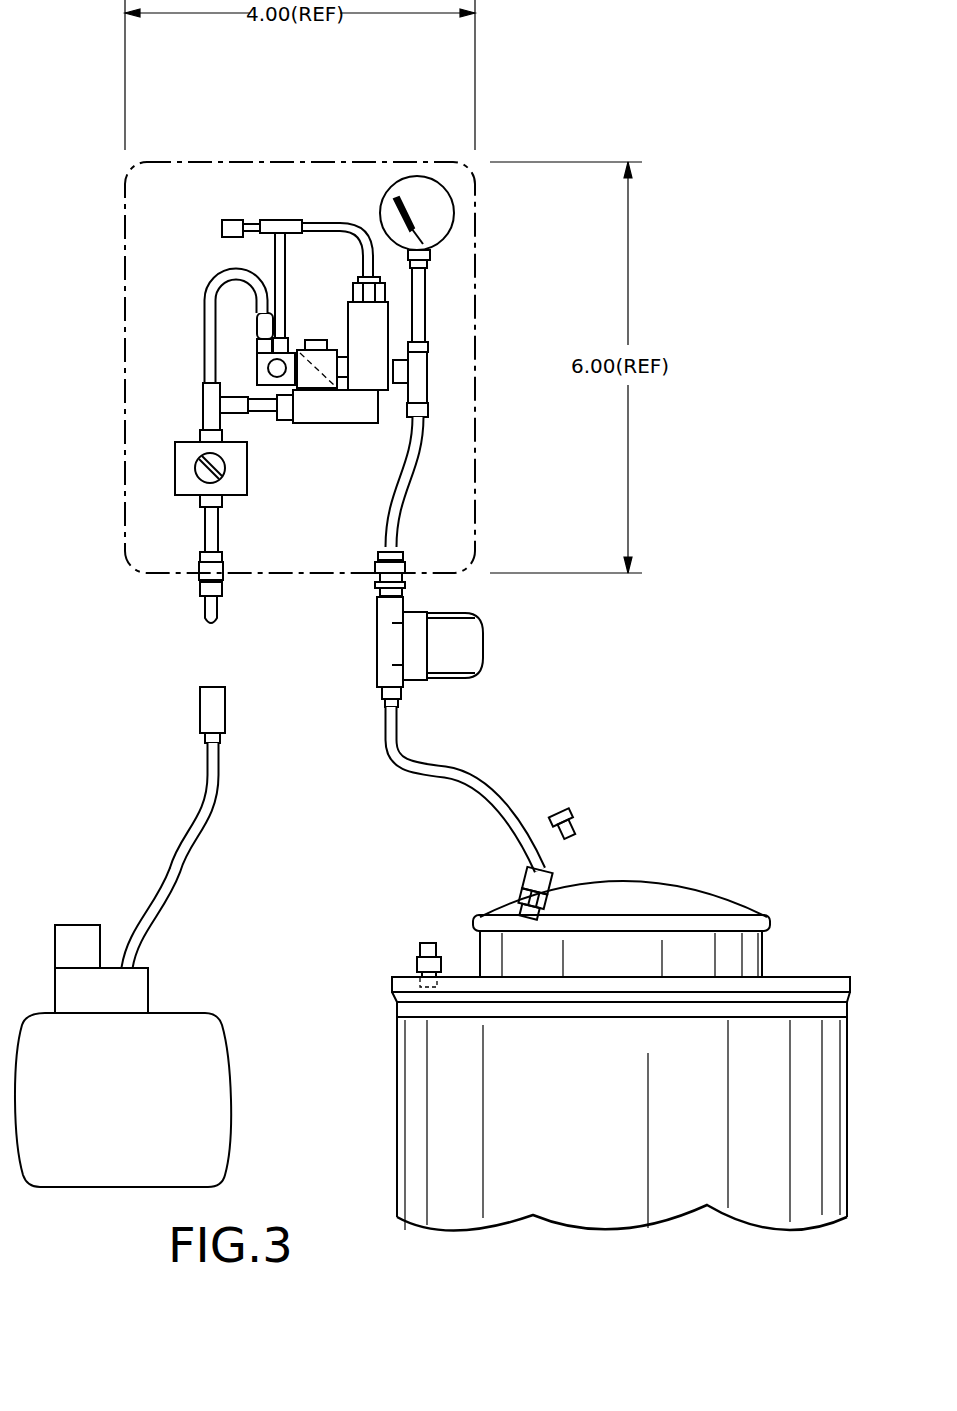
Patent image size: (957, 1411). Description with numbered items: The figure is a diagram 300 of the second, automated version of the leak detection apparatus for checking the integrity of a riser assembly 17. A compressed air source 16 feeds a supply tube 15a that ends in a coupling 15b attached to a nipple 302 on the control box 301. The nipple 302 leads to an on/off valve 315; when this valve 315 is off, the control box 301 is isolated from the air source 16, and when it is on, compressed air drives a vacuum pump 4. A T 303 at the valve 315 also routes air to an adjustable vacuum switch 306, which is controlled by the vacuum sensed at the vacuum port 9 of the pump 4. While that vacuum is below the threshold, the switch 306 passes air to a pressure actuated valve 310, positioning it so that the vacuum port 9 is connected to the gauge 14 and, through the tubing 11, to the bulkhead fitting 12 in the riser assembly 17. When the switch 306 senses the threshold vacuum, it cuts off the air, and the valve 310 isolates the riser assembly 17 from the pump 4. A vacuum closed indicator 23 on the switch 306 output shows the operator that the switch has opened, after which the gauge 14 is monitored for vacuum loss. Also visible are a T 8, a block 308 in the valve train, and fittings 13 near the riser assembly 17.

The diagram 300 is at (716, 178).
The control box 301 is at (380, 145).
The nipple 302 is at (200, 590).
The T 303 is at (203, 405).
The adjustable vacuum switch 306 is at (257, 368).
The valve block 308 is at (315, 342).
The pressure actuated valve 310 is at (350, 300).
The on/off valve 315 is at (175, 478).
The vacuum closed indicator 23 is at (222, 228).
The gauge 14 is at (455, 213).
The T 8 is at (428, 370).
The vacuum pump 4 is at (380, 412).
The vacuum port 9 is at (310, 383).
The tubing 11 is at (407, 490).
The bulkhead fitting 12 is at (528, 888).
The quick connect fitting 13 is at (578, 811).
The supply tube 15a is at (173, 857).
The coupling 15b is at (200, 713).
The compressed air source 16 is at (192, 1066).
The riser assembly 17 is at (413, 1148).